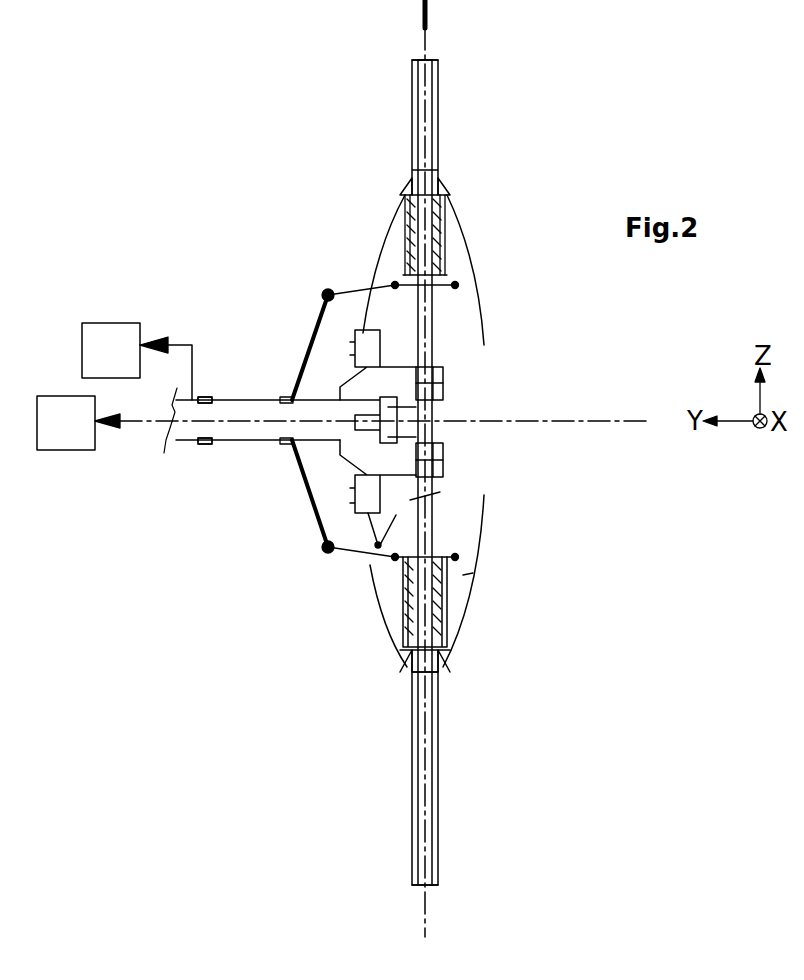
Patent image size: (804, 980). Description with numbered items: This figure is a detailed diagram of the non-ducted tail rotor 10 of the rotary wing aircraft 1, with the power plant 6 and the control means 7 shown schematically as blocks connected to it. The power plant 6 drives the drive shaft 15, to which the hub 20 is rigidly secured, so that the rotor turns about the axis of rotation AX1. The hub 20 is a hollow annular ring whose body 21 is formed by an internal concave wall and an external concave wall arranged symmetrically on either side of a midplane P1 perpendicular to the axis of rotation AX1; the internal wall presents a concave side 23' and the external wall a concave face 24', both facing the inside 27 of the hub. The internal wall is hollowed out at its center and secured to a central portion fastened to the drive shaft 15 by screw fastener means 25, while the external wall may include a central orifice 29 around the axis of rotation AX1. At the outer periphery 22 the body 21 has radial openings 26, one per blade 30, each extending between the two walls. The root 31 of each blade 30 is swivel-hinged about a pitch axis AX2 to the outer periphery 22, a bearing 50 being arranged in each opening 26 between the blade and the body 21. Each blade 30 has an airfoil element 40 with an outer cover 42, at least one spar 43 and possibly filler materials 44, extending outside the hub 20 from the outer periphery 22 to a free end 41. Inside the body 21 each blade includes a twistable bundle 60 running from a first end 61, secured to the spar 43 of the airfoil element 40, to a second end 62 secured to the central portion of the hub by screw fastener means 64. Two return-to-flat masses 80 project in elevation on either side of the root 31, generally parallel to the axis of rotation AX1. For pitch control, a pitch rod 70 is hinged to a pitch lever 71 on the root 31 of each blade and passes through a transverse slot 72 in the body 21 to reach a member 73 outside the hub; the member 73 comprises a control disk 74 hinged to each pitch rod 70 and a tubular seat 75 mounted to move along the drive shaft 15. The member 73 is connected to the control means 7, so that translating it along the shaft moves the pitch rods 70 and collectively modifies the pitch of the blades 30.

The rotary wing aircraft 1 is at (108, 7).
The power plant 6 is at (70, 434).
The control means 7 is at (120, 367).
The non-ducted tail rotor 10 is at (598, 605).
The drive shaft 15 is at (168, 448).
The hub 20 is at (353, 216).
The body 21 is at (358, 265).
The outer periphery 22 is at (440, 167).
The concave side 23' is at (453, 616).
The concave face 24' is at (397, 496).
The screw fastener means 25 is at (372, 538).
The radial openings 26 is at (420, 692).
The inside of the hub 27 is at (447, 438).
The central orifice 29 is at (472, 437).
The blades 30 is at (440, 146).
The root 31 is at (452, 200).
The airfoil element 40 is at (432, 132).
The free end 41 is at (420, 890).
The outer cover 42 is at (440, 80).
The spar 43 is at (412, 67).
The filler materials 44 is at (412, 107).
The bearing 50 is at (443, 679).
The twistable bundle 60 is at (418, 311).
The first end 61 is at (445, 218).
The second end 62 is at (444, 376).
The screw fastener means 64 is at (444, 388).
The pitch rod 70 is at (374, 562).
The pitch lever 71 is at (472, 573).
The transverse slot 72 is at (410, 500).
The member 73 is at (288, 387).
The control disk 74 is at (300, 356).
The tubular seat 75 is at (226, 446).
The return-to-flat masses 80 is at (460, 283).
The axis of rotation AX1 is at (647, 421).
The pitch axis AX2 is at (424, 50).
The midplane P1 is at (436, 6).